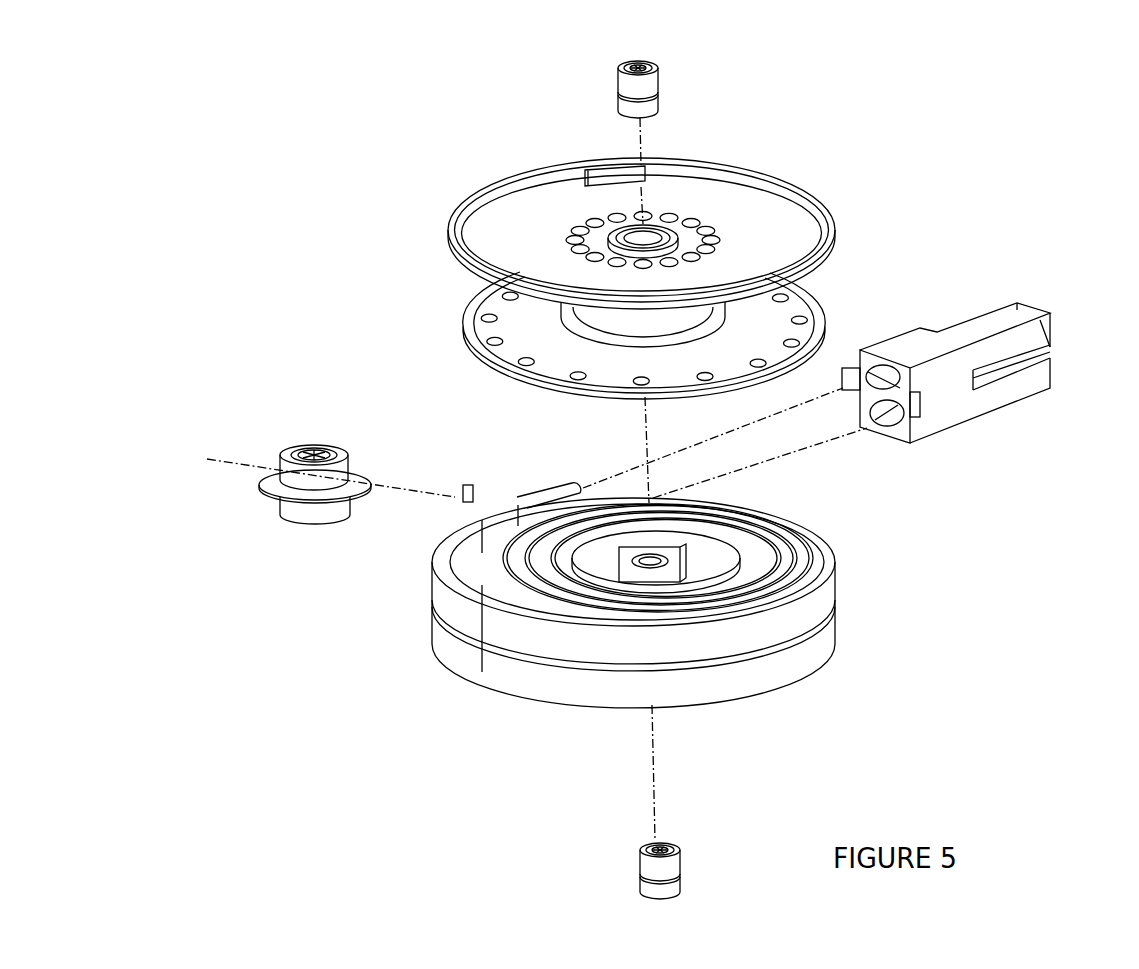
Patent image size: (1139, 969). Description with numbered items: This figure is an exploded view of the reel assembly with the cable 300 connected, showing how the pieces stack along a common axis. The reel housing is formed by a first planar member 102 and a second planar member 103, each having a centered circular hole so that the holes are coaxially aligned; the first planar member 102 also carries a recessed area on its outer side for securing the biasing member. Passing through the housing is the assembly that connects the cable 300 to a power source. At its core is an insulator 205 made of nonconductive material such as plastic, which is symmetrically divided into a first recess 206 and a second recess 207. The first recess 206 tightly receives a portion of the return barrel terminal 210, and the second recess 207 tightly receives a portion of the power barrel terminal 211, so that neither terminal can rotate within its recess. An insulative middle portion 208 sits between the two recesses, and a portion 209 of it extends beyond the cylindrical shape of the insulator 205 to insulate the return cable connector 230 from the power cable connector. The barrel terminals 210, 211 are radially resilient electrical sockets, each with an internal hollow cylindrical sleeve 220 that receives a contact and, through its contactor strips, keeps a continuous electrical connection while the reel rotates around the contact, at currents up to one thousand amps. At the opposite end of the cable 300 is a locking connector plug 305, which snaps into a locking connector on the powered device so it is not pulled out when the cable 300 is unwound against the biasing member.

The first planar member 102 is at (823, 202).
The second planar member 103 is at (467, 308).
The insulator 205 is at (310, 471).
The first recess 206 is at (310, 452).
The second recess 207 is at (308, 523).
The insulative middle portion 208 is at (285, 487).
The portion 209 is at (277, 498).
The return barrel terminal 210 is at (660, 93).
The power barrel terminal 211 is at (640, 878).
The hollow cylindrical sleeve 220 is at (626, 64).
The return cable connector 230 is at (674, 556).
The cable 300 is at (837, 630).
The locking connector plug 305 is at (1052, 333).